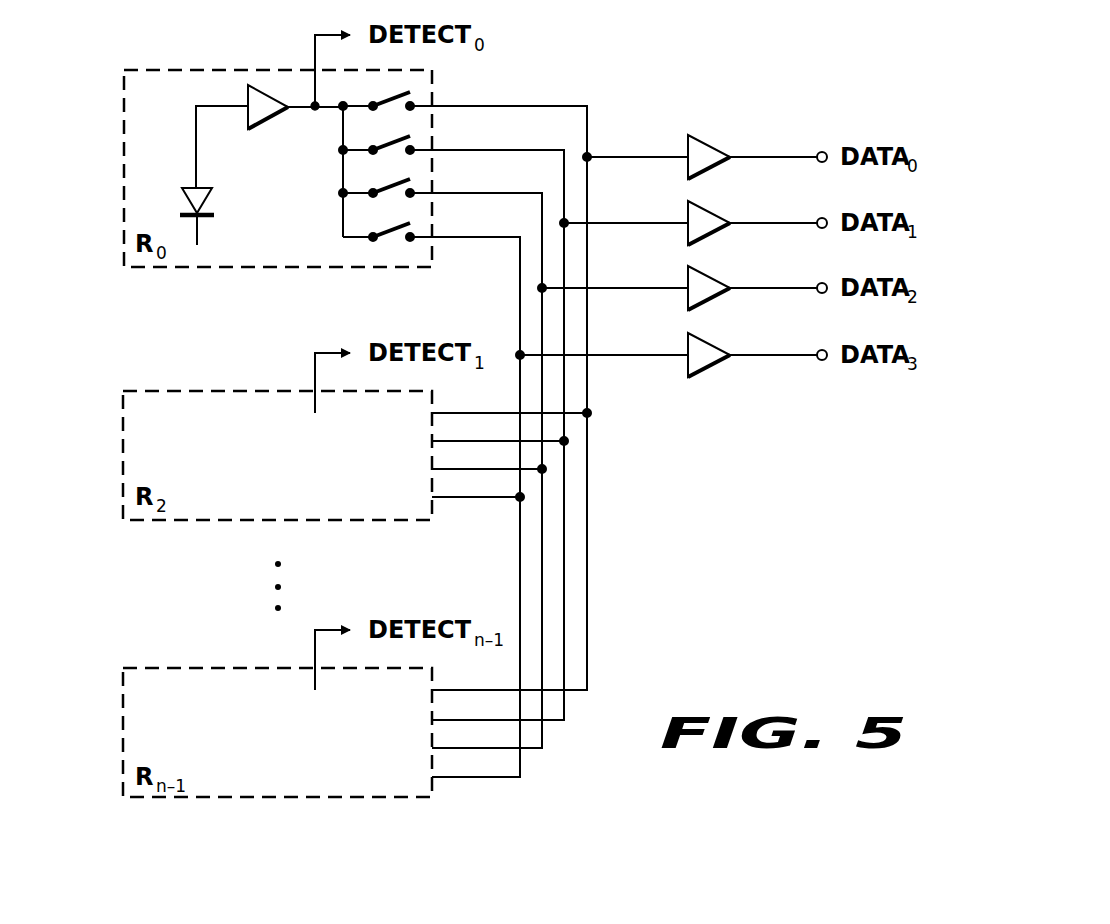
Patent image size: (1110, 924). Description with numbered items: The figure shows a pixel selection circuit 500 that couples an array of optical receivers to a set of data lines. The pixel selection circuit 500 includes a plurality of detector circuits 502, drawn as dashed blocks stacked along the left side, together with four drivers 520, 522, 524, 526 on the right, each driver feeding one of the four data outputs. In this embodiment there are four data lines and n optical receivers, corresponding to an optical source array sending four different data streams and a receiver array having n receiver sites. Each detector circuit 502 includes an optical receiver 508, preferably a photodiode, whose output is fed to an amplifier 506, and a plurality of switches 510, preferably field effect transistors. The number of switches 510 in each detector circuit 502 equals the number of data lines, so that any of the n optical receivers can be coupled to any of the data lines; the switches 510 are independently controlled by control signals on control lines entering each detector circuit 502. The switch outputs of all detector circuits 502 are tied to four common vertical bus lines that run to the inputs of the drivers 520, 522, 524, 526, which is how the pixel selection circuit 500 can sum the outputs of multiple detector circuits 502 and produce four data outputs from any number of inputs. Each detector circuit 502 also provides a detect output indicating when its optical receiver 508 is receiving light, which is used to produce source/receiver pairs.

The pixel selection circuit 500 is at (788, 653).
The detector circuit 502 is at (124, 168).
The amplifier 506 is at (270, 120).
The optical receiver 508 is at (212, 193).
The switches 510 is at (324, 206).
The driver 520 is at (712, 170).
The driver 522 is at (712, 236).
The driver 524 is at (712, 301).
The driver 526 is at (712, 368).